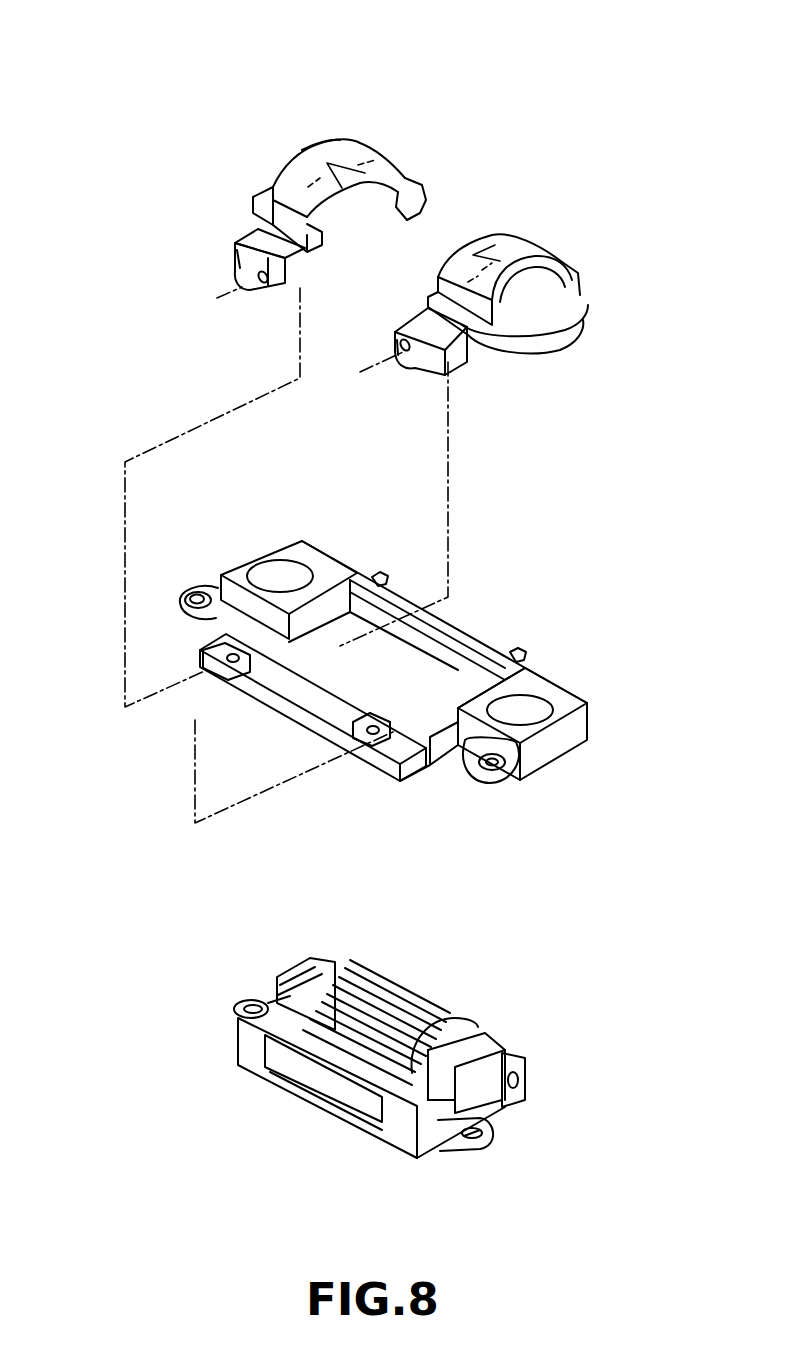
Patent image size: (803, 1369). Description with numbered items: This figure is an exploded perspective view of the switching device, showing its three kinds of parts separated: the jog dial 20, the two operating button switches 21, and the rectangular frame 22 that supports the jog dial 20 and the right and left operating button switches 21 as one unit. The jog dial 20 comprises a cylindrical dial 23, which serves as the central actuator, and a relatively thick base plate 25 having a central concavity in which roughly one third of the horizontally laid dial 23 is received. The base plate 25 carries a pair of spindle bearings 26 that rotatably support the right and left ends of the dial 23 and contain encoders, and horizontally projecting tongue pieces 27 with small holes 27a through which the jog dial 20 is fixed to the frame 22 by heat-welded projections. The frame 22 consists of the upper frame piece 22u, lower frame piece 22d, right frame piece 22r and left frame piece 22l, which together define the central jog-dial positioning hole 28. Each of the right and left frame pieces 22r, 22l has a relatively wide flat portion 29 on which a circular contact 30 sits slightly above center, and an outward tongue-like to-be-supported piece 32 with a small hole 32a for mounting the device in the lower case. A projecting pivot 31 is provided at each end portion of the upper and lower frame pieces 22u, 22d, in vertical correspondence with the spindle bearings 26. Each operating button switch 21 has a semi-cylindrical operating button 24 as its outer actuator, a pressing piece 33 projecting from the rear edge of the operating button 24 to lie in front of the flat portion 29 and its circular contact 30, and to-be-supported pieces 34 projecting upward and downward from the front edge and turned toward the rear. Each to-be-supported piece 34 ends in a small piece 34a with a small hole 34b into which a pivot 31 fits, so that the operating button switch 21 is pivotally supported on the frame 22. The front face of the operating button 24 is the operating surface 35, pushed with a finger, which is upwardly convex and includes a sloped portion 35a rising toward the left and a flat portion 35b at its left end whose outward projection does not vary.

The jog dial 20 is at (442, 990).
The operating button switch 21 is at (362, 143).
The frame 22 is at (468, 590).
The lower frame piece 22d is at (233, 680).
The upper frame piece 22u is at (487, 637).
The left frame piece 22l is at (280, 550).
The right frame piece 22r is at (553, 747).
The dial 23 is at (385, 970).
The operating button 24 is at (385, 158).
The base plate 25 is at (303, 1090).
The spindle bearing 26 is at (317, 967).
The tongue piece 27 is at (243, 1008).
The small hole 27a is at (253, 1013).
The jog-dial positioning hole 28 is at (447, 640).
The flat portion 29 is at (237, 590).
The circular contact 30 is at (290, 573).
The projecting pivot 31 is at (227, 653).
The to-be-supported piece 32 is at (190, 617).
The small hole 32a is at (197, 597).
The pressing piece 33 is at (263, 200).
The to-be-supported piece 34 is at (267, 237).
The small piece 34a is at (243, 263).
The small hole 34b is at (260, 287).
The operating surface 35 is at (343, 47).
The sloped portion 35a is at (317, 148).
The flat portion 35b is at (298, 148).